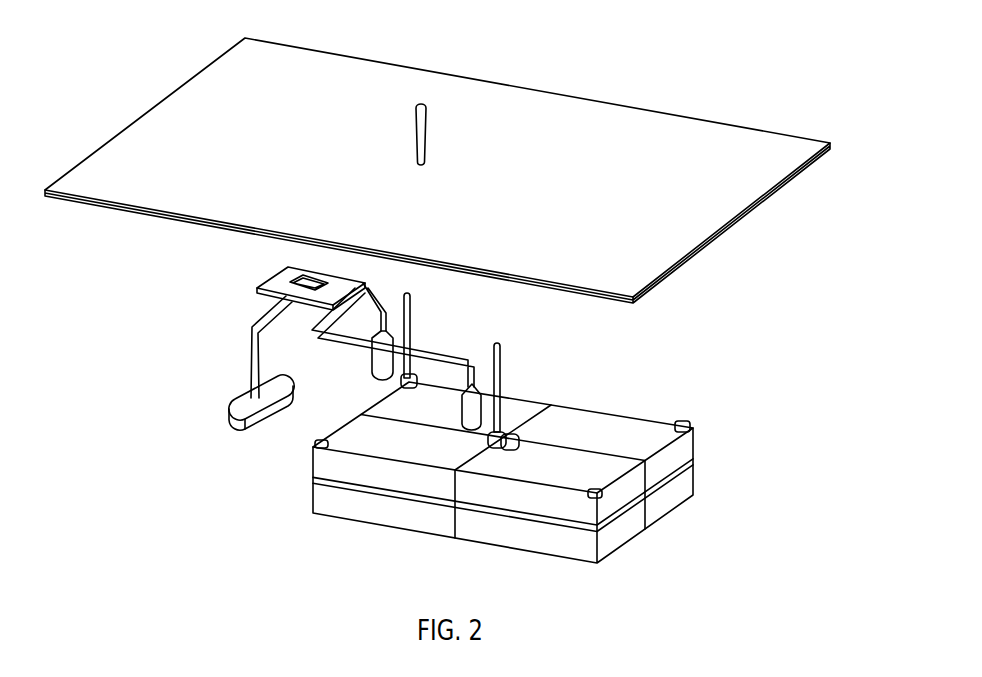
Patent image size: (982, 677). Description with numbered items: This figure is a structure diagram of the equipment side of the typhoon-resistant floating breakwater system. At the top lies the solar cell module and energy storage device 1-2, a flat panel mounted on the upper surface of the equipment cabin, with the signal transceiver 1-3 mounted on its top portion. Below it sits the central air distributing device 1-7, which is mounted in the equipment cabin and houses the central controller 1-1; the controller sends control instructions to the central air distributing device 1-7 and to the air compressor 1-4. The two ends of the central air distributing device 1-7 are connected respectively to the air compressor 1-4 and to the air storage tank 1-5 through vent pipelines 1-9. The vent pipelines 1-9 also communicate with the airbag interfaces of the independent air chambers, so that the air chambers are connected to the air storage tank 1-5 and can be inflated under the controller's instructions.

The central controller 1-1 is at (297, 285).
The solar cell module and energy storage device 1-2 is at (732, 135).
The signal transceiver 1-3 is at (427, 135).
The air compressor 1-4 is at (230, 407).
The air storage tank 1-5 is at (463, 405).
The central air distributing device 1-7 is at (258, 297).
The vent pipeline 1-9 is at (438, 350).